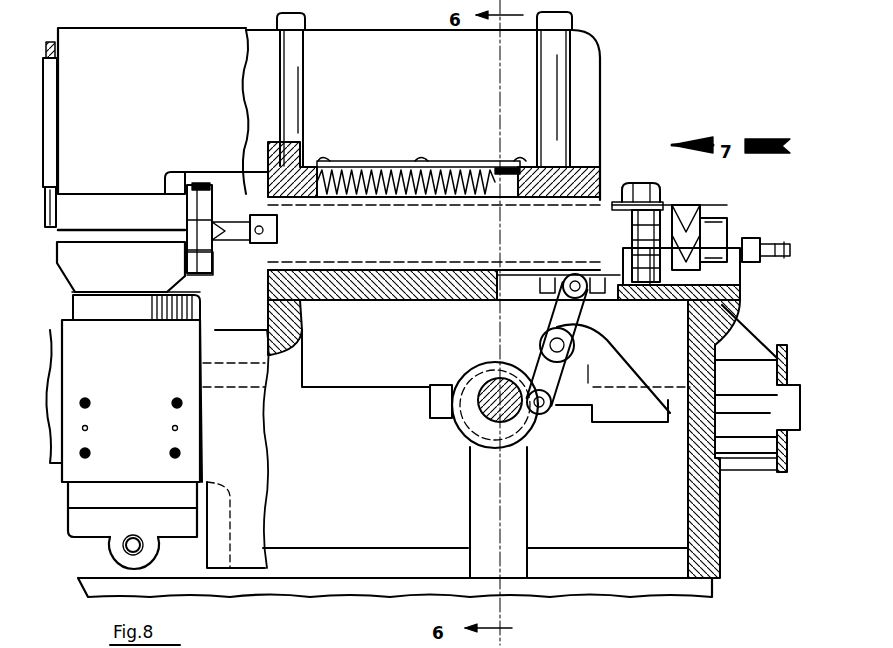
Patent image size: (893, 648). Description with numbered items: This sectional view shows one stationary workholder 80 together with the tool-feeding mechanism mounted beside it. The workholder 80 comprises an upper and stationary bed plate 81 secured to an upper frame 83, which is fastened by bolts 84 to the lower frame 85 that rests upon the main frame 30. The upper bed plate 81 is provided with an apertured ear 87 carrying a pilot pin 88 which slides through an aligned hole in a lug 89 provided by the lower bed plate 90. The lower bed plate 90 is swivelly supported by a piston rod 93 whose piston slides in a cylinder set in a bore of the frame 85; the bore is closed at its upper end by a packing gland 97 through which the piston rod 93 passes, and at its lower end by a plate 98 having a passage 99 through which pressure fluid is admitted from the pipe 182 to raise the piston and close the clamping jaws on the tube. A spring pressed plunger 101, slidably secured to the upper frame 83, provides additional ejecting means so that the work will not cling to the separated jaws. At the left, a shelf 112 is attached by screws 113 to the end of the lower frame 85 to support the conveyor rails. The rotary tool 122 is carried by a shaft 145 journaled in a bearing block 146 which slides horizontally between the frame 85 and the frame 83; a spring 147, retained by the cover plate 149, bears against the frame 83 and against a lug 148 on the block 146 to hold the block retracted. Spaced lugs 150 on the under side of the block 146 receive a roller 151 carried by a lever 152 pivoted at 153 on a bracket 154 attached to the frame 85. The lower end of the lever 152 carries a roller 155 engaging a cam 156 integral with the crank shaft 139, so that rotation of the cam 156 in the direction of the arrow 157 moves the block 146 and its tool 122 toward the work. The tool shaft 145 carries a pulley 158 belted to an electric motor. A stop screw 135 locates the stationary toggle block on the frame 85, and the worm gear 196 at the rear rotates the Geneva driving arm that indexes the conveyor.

The main frame 30 is at (568, 592).
The stationary workholder 80 is at (127, 212).
The upper bed plate 81 is at (180, 178).
The upper frame 83 is at (370, 45).
The bolts 84 is at (306, 24).
The lower frame 85 is at (333, 292).
The apertured ear 87 is at (215, 194).
The pilot pin 88 is at (200, 183).
The lug 89 is at (210, 277).
The lower bed plate 90 is at (80, 263).
The piston rod 93 is at (143, 292).
The packing gland 97 is at (205, 305).
The plate 98 is at (75, 519).
The passage 99 is at (122, 542).
The spring pressed plunger 101 is at (50, 228).
The shelf 112 is at (52, 337).
The screws 113 is at (88, 452).
The rotary tool 122 is at (236, 243).
The stop screw 135 is at (795, 237).
The crank shaft 139 is at (500, 385).
The shaft 145 is at (727, 232).
The bearing block 146 is at (388, 255).
The spring 147 is at (370, 170).
The lug 148 is at (498, 170).
The cover plate 149 is at (440, 146).
The spaced lugs 150 is at (560, 258).
The roller 151 is at (578, 274).
The lever 152 is at (576, 322).
The pivot 153 is at (543, 338).
The bracket 154 is at (632, 412).
The roller 155 is at (545, 416).
The cam 156 is at (485, 450).
The arrow 157 is at (455, 440).
The pulley 158 is at (698, 212).
The pipe 182 is at (140, 539).
The worm gear 196 is at (782, 346).